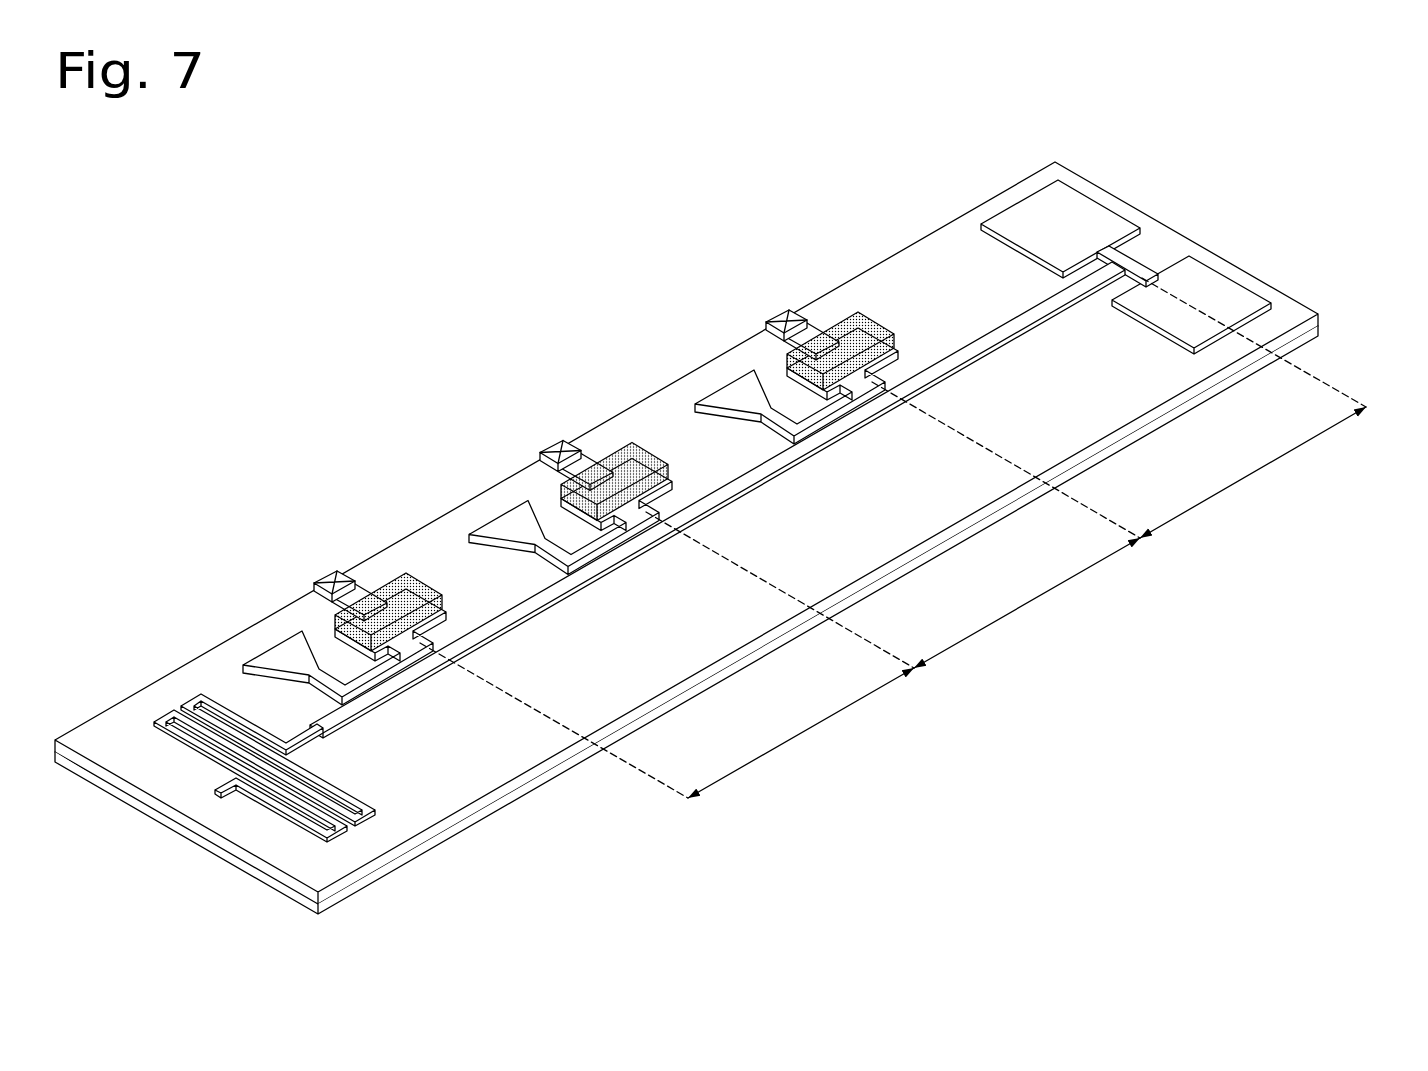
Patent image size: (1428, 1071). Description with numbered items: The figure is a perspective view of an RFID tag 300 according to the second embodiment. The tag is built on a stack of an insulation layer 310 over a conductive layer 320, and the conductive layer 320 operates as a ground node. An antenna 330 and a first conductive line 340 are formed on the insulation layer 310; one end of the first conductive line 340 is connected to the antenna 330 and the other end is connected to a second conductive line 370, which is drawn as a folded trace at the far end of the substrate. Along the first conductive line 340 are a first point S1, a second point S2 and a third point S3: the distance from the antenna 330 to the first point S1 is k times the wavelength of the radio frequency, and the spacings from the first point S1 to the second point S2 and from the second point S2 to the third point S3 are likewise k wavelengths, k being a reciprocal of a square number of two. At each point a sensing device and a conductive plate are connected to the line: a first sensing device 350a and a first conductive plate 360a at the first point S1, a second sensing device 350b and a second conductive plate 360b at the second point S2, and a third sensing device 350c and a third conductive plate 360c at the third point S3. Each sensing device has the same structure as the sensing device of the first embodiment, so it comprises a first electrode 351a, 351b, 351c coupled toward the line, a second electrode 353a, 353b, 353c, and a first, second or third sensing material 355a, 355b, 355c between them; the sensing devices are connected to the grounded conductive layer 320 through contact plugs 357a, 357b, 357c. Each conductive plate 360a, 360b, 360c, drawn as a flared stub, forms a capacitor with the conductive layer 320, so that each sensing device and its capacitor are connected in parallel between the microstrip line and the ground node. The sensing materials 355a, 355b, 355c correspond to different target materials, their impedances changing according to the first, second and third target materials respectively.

The RFID tag 300 is at (1337, 83).
The insulation layer 310 is at (1319, 320).
The conductive layer 320 is at (1319, 333).
The antenna 330 is at (1107, 221).
The first conductive line 340 is at (527, 607).
The first sensing device 350a is at (883, 168).
The second sensing device 350b is at (567, 445).
The third sensing device 350c is at (341, 576).
The first resonator pad 351a is at (906, 352).
The second resonator pad 351b is at (565, 438).
The third resonator pad 351c is at (339, 568).
The first connection line 353a is at (826, 330).
The second connection line 353b is at (580, 418).
The third connection line 353c is at (354, 548).
The first sensing material 355a is at (857, 322).
The second sensing material 355b is at (614, 422).
The third sensing material 355c is at (388, 552).
The contact plug 357a is at (787, 318).
The contact plug 357b is at (545, 419).
The contact plug 357c is at (319, 549).
The first conductive plate 360a is at (743, 383).
The second conductive plate 360b is at (560, 489).
The third conductive plate 360c is at (334, 619).
The second conductive line 370 is at (172, 712).
The first point S1 is at (888, 397).
The second point S2 is at (672, 564).
The third point S3 is at (446, 694).